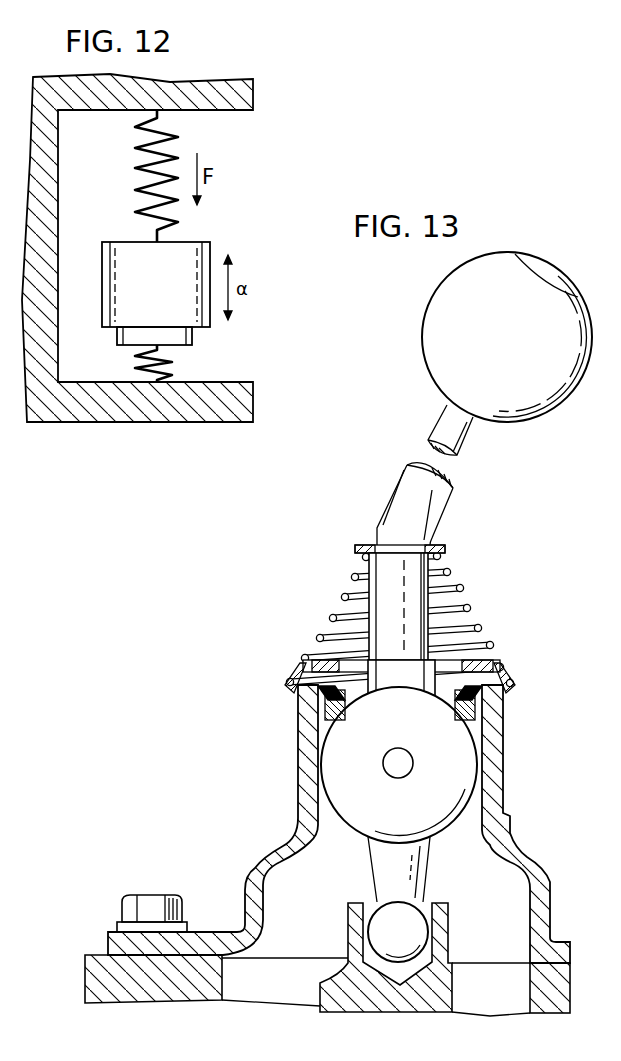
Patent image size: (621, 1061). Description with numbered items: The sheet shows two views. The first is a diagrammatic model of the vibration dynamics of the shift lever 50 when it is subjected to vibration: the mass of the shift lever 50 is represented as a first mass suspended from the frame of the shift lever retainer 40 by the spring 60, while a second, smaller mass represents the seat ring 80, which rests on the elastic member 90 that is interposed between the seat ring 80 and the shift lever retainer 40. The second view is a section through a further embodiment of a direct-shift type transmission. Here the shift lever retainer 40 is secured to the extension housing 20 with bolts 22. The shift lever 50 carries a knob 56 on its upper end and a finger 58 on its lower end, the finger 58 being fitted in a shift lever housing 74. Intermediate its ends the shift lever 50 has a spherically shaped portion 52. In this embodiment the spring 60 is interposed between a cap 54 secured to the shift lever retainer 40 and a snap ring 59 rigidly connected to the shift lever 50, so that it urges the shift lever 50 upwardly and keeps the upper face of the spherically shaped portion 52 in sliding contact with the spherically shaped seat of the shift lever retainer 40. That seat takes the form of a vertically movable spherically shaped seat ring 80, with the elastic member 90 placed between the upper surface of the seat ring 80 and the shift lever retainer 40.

In FIG. 12, the shift lever retainer 40 is at (156, 416).
In FIG. 12, the spring 60 is at (140, 183).
In FIG. 13, the spring 60 is at (470, 606).
In FIG. 12, the shift lever 50 is at (113, 268).
In FIG. 13, the shift lever 50 is at (443, 512).
In FIG. 12, the seat ring 80 is at (118, 336).
In FIG. 13, the seat ring 80 is at (338, 700).
In FIG. 12, the elastic member 90 is at (168, 358).
In FIG. 13, the elastic member 90 is at (458, 695).
In FIG. 13, the knob 56 is at (548, 400).
In FIG. 13, the snap ring 59 is at (445, 546).
In FIG. 13, the cap 54 is at (475, 663).
In FIG. 13, the extension housing 20 is at (527, 860).
In FIG. 13, the shift lever housing 74 is at (440, 990).
In FIG. 13, the bolts 22 is at (153, 908).
In FIG. 13, the spherically shaped portion 52 is at (432, 842).
In FIG. 13, the finger 58 is at (425, 938).